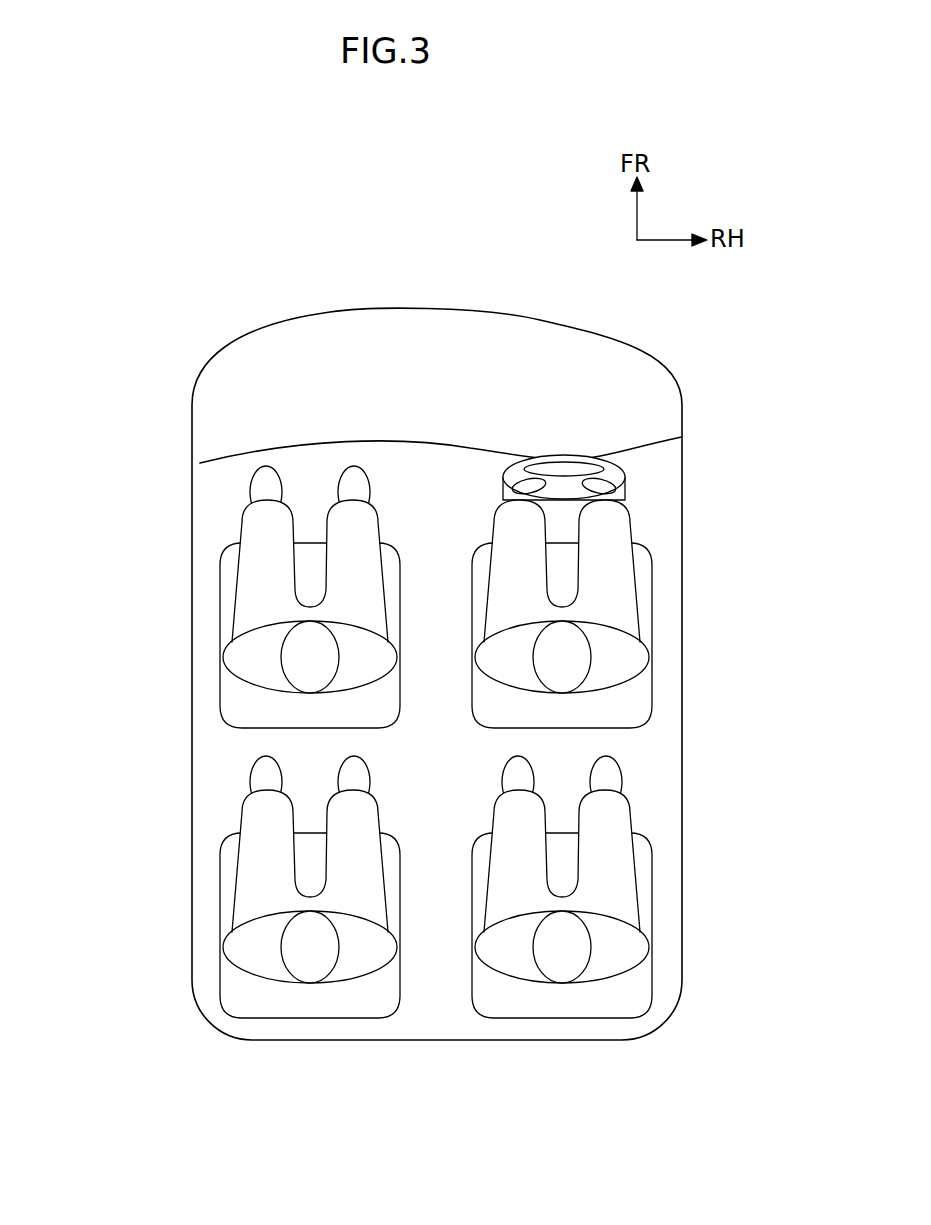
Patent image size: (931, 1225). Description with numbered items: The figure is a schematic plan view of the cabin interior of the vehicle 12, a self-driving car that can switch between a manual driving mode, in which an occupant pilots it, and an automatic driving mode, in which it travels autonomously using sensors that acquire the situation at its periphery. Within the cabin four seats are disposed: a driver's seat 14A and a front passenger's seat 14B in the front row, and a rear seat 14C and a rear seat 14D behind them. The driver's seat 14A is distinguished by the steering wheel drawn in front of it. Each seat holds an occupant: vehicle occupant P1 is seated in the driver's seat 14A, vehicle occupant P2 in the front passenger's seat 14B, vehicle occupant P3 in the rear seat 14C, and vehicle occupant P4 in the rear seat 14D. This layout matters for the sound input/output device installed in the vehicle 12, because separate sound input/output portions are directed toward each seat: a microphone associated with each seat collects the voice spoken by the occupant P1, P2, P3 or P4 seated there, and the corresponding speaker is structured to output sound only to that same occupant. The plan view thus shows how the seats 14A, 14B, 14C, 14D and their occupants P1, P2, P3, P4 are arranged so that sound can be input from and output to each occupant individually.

The vehicle 12 is at (196, 283).
The driver's seat 14A is at (657, 580).
The front passenger's seat 14B is at (220, 626).
The rear seat 14C is at (657, 870).
The rear seat 14D is at (220, 916).
The vehicle occupant P1 is at (640, 626).
The vehicle occupant P2 is at (240, 578).
The vehicle occupant P3 is at (640, 916).
The vehicle occupant P4 is at (240, 868).